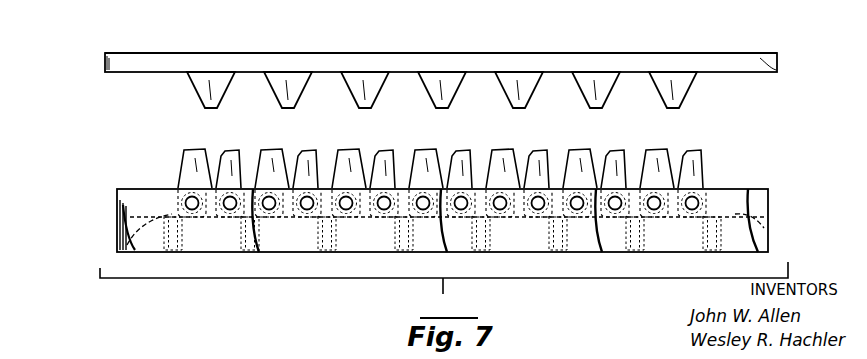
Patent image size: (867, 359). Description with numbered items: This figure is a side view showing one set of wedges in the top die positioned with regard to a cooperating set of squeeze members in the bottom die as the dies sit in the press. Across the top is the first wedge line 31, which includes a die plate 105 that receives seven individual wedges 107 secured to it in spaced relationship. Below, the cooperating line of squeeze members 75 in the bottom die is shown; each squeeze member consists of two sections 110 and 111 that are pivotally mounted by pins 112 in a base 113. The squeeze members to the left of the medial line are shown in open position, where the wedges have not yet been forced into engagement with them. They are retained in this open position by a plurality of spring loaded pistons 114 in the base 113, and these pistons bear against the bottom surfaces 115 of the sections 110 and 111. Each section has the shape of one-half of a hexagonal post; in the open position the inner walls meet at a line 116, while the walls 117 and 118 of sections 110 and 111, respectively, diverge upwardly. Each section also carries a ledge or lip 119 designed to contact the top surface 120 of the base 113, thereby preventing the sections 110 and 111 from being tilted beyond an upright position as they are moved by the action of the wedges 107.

The die plate 105 is at (158, 66).
The first wedge line 31 is at (366, 52).
The individual wedges 107 is at (278, 96).
The squeeze member section 110 is at (184, 150).
The squeeze member section 111 is at (236, 151).
The wall of section 117 is at (204, 150).
The wall of section 118 is at (224, 152).
The line 116 is at (208, 170).
The line of squeeze members 75 is at (726, 171).
The top surface of base 120 is at (126, 189).
The ledge or lip 119 is at (178, 192).
The pins 112 is at (199, 210).
The bottom surfaces 115 is at (388, 219).
The spring loaded pistons 114 is at (127, 233).
The base 113 is at (444, 278).